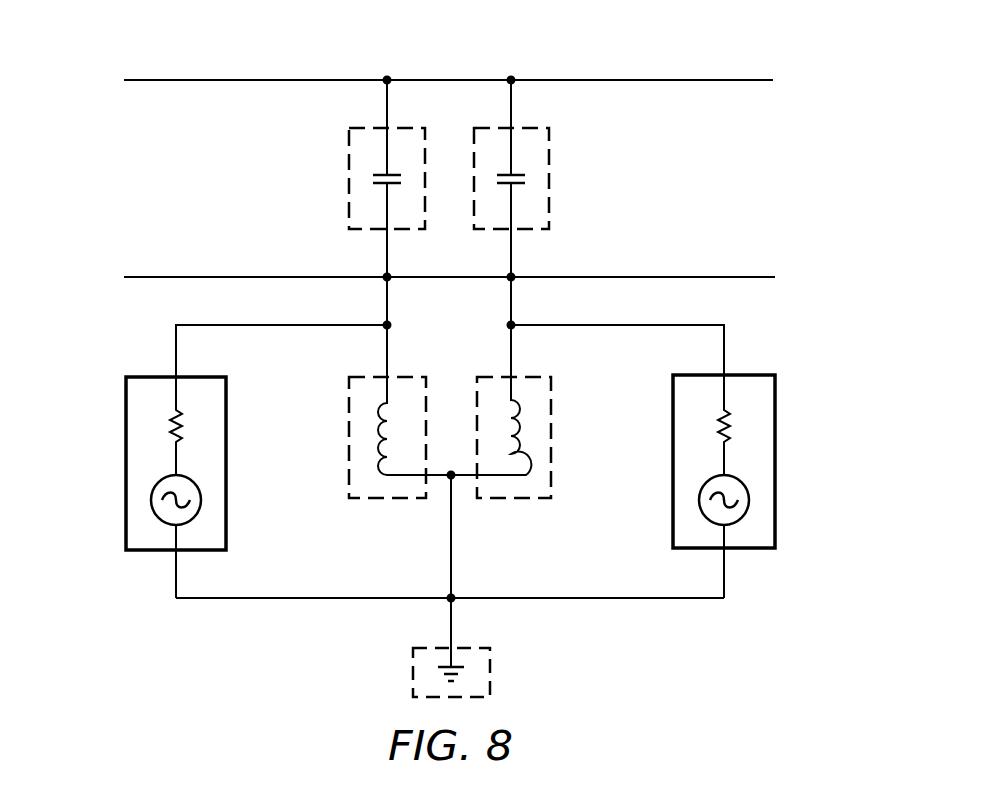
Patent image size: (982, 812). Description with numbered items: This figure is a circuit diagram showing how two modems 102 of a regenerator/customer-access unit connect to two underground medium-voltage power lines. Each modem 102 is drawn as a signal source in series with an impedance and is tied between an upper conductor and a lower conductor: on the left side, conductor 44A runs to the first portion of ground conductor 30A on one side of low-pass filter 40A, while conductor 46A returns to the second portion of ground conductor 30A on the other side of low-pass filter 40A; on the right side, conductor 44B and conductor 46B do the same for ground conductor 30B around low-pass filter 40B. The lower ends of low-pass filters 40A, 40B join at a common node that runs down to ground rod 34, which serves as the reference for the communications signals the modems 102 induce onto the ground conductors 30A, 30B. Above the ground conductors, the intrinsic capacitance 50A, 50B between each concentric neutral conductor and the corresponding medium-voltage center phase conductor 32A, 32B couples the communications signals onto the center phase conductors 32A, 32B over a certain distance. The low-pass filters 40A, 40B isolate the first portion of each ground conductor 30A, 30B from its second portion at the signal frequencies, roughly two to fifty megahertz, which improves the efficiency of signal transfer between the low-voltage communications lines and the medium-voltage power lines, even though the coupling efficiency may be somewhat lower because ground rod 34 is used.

The medium-voltage center phase conductor 32A is at (212, 80).
The medium-voltage center phase conductor 32B is at (685, 80).
The ground conductor 30A is at (248, 277).
The ground conductor 30B is at (650, 277).
The intrinsic capacitance 50A is at (347, 178).
The intrinsic capacitance 50B is at (552, 176).
The conductor 44A is at (302, 325).
The conductor 44B is at (600, 325).
The low-pass filter 40A is at (377, 500).
The low-pass filter 40B is at (525, 500).
The conductor 46A is at (291, 598).
The conductor 46B is at (613, 598).
The modem 102 is at (123, 465).
The ground rod 34 is at (413, 674).